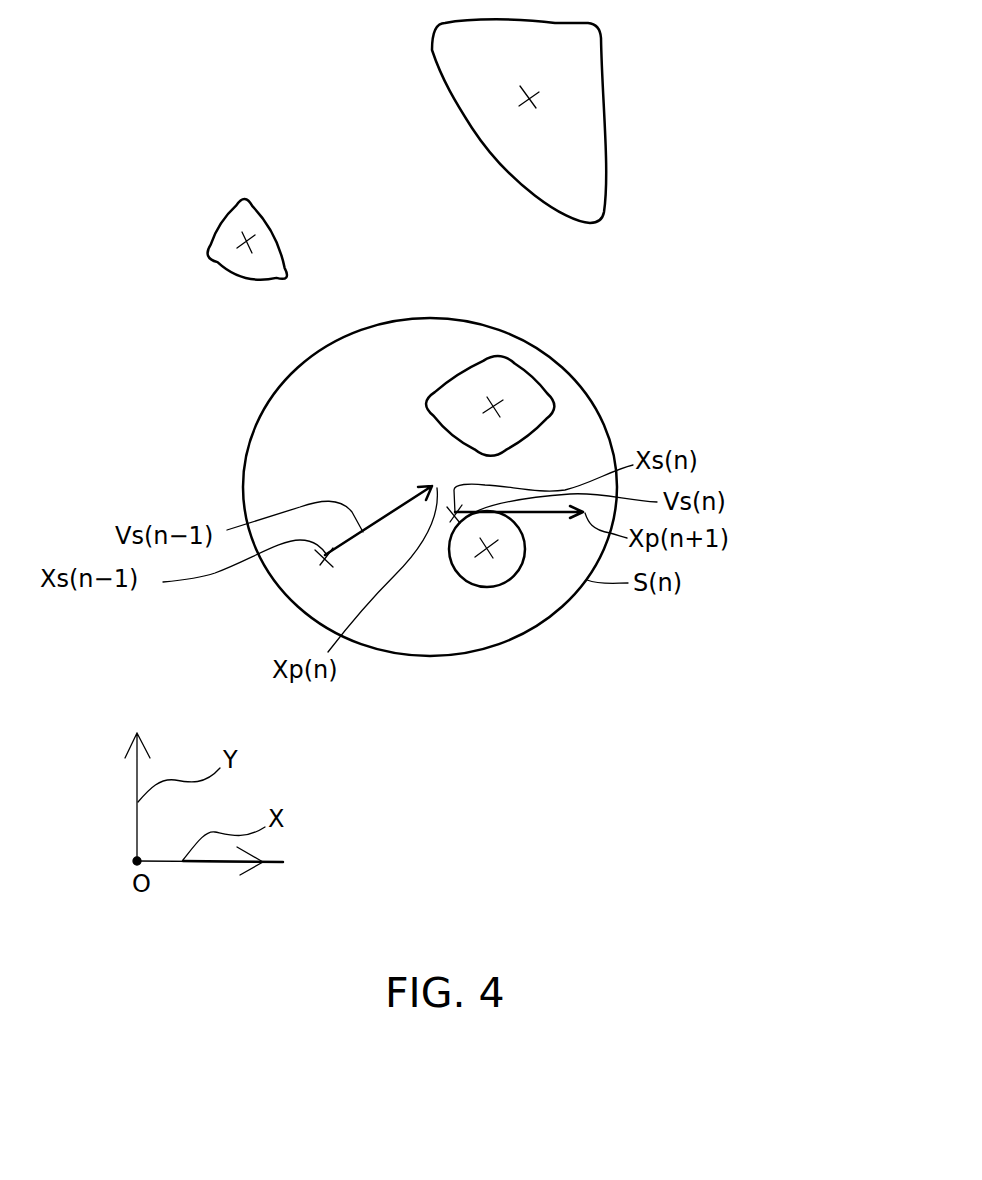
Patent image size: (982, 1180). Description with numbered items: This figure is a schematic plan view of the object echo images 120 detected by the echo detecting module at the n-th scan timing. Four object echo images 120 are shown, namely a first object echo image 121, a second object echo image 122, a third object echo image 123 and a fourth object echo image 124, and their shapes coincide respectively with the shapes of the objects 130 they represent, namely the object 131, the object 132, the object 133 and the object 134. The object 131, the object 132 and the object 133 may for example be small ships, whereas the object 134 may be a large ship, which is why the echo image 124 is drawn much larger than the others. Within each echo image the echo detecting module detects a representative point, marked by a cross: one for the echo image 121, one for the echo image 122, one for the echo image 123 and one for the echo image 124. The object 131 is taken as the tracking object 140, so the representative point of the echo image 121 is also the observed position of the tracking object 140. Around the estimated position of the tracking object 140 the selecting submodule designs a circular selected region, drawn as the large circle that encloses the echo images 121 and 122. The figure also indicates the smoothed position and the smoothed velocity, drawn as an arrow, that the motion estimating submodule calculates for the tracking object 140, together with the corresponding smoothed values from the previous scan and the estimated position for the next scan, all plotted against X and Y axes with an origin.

The object echo images 120 is at (427, 368).
The object echo image 121 is at (571, 614).
The object echo image 122 is at (590, 375).
The object echo image 123 is at (221, 245).
The object echo image 124 is at (608, 121).
The objects 130 is at (427, 368).
The object 131 is at (614, 578).
The object 132 is at (523, 452).
The object 133 is at (273, 180).
The object 134 is at (605, 162).
The tracking object 140 is at (520, 556).